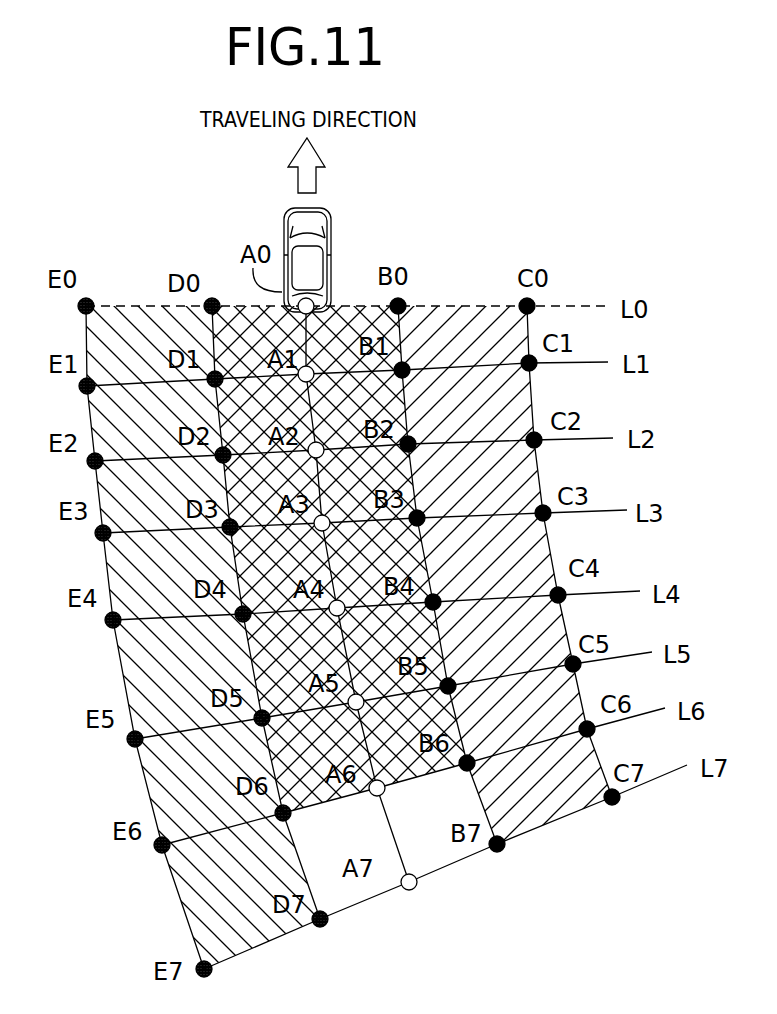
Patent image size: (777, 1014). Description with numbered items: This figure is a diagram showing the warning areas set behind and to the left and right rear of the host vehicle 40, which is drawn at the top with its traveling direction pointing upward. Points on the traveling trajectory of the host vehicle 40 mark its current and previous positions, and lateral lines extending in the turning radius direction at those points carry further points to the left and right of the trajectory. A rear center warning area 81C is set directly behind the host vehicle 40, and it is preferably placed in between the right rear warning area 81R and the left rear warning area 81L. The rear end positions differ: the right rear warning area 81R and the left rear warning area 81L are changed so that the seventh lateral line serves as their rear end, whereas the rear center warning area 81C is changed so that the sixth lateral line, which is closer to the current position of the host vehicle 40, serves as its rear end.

The host vehicle 40 is at (333, 230).
The left rear warning area 81L is at (133, 328).
The rear center warning area 81C is at (353, 315).
The right rear warning area 81R is at (465, 318).